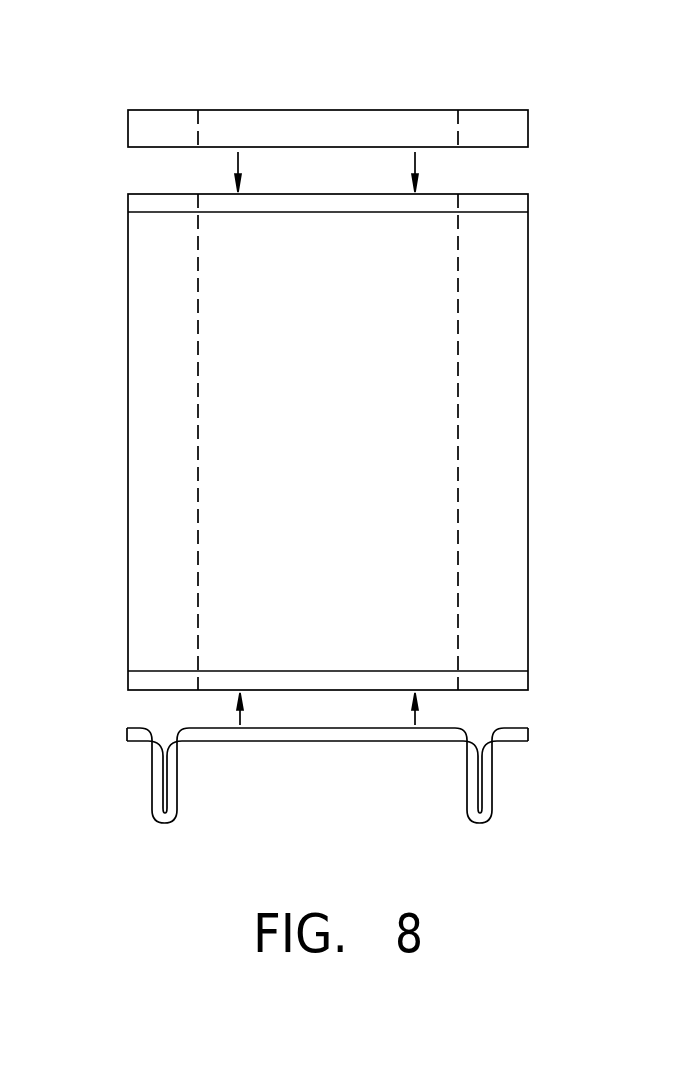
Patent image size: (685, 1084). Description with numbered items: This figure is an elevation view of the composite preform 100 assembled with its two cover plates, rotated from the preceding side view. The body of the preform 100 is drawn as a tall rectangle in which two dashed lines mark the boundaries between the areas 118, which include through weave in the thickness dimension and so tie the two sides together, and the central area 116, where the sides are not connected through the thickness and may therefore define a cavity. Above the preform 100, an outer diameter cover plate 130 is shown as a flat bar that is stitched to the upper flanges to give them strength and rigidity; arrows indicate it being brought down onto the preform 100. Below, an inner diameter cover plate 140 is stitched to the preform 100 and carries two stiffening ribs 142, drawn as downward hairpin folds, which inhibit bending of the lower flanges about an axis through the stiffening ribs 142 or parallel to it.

The preform 100 is at (355, 441).
The outer diameter cover plate 130 is at (263, 130).
The area 116 is at (323, 442).
The areas 118 is at (157, 540).
The inner diameter cover plate 140 is at (371, 784).
The stiffening ribs 142 is at (165, 808).